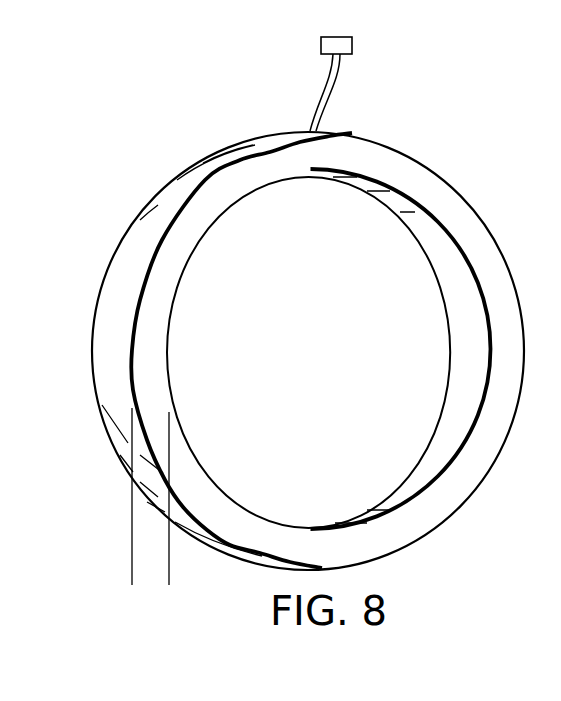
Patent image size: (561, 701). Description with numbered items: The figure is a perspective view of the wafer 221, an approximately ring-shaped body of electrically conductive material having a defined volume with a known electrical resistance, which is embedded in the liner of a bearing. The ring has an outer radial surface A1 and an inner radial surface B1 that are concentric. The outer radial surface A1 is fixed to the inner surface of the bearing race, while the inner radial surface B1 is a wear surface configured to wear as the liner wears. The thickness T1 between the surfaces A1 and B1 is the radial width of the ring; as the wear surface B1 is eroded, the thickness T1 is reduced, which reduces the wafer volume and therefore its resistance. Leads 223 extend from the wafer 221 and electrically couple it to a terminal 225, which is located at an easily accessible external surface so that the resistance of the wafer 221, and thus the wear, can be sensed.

The wafer 221 is at (272, 351).
The leads 223 is at (333, 82).
The terminal 225 is at (352, 45).
The outer radial surface A1 is at (132, 269).
The wear surface B1 is at (192, 253).
The thickness T1 is at (181, 573).